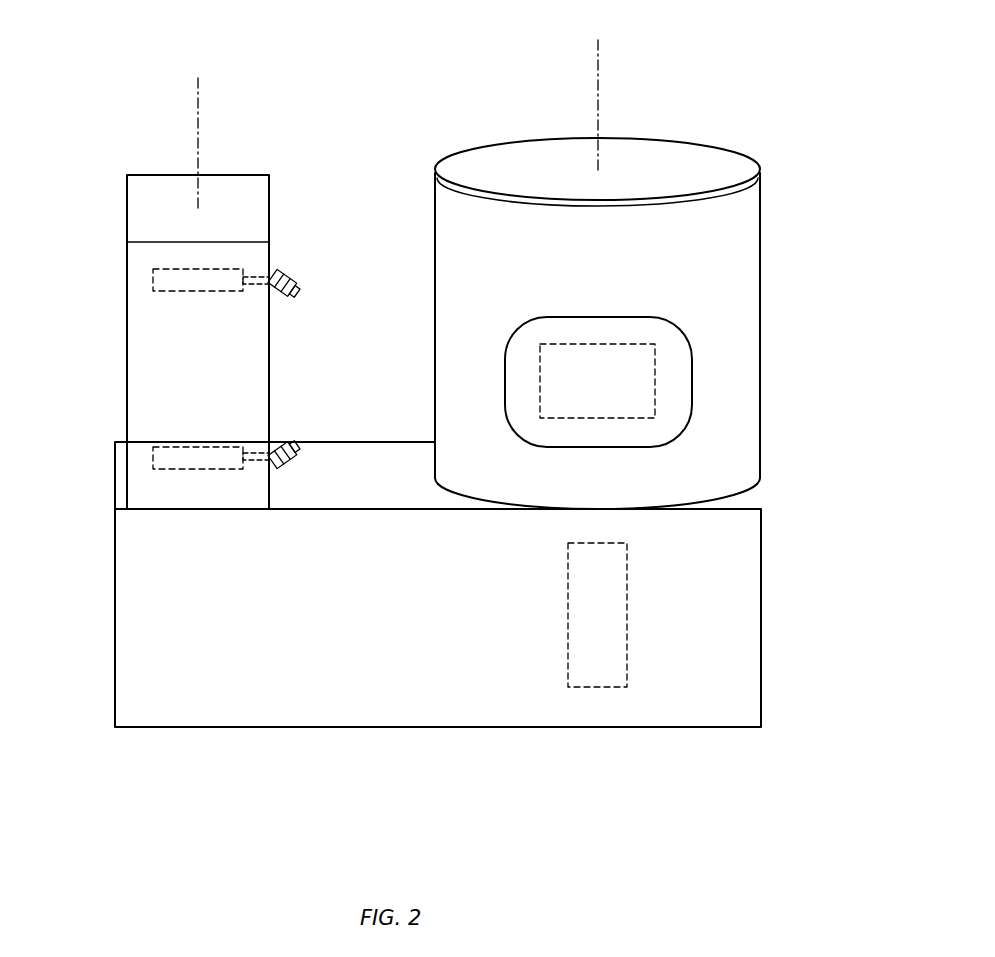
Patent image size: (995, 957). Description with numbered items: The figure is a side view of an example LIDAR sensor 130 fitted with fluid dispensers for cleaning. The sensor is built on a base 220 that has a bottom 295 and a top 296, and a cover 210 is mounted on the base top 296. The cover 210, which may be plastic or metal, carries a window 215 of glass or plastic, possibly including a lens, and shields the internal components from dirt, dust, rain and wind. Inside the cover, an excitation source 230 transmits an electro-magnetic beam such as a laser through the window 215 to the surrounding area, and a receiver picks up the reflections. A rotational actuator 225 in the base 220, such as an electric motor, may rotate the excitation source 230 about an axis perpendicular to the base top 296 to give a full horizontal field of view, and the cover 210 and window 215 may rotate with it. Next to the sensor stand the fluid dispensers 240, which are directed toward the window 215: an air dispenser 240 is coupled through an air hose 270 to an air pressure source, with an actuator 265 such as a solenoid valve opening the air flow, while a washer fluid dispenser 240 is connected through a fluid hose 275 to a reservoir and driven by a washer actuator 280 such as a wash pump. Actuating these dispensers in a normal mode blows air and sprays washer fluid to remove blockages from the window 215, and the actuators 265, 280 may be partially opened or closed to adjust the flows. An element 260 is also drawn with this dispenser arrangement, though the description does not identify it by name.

The LIDAR sensor 130 is at (692, 118).
The cover 210 is at (448, 212).
The window 215 is at (568, 328).
The base 220 is at (437, 697).
The rotational actuator 225 is at (605, 688).
The excitation source 230 is at (623, 344).
The fluid dispenser 240 is at (292, 275).
The tower 260 is at (127, 503).
The actuator 265 is at (153, 270).
The air hose 270 is at (253, 278).
The fluid hose 275 is at (243, 470).
The washer actuator 280 is at (153, 470).
The bottom 295 is at (203, 727).
The top 296 is at (404, 485).